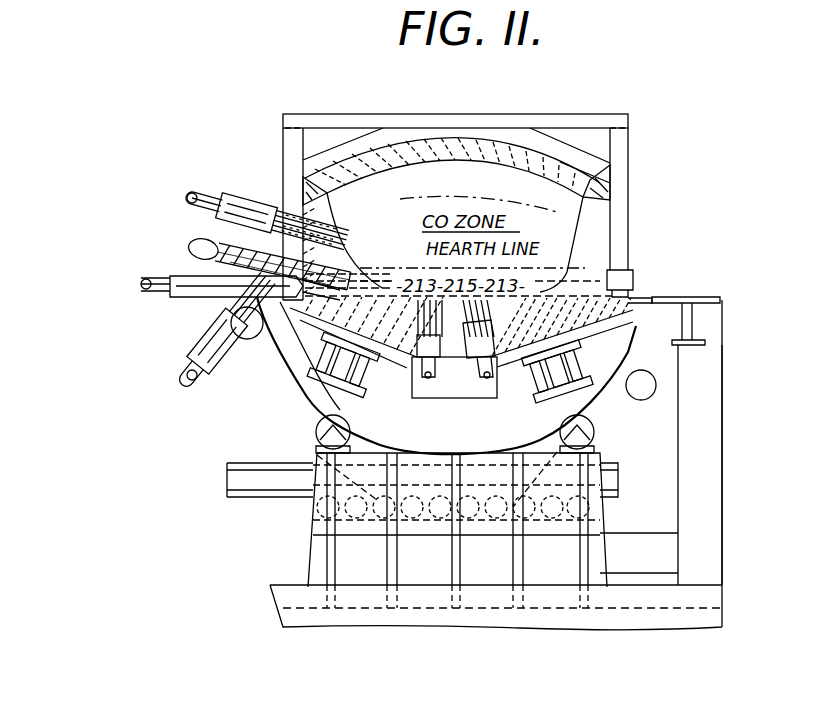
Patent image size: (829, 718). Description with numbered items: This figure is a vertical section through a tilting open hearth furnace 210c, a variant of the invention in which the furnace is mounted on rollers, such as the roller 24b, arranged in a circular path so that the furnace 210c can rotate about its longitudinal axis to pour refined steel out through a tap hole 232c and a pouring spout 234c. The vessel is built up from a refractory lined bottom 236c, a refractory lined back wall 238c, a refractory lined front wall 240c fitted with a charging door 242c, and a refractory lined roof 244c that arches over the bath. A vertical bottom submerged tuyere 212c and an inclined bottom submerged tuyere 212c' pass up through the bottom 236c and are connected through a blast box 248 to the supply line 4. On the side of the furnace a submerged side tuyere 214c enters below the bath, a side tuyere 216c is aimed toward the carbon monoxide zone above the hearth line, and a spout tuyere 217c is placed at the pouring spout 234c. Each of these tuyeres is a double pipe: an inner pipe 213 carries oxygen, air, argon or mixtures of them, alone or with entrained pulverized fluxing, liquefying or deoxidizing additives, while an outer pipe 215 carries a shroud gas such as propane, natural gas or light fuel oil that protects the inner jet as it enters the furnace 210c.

The line 4 is at (203, 192).
The trunnion roller 24b is at (246, 340).
The tilting open hearth furnace 210c is at (632, 206).
The vertical bottom submerged tuyere 212c is at (369, 384).
The inclined bottom submerged tuyere 212c' is at (535, 387).
The inner pipe 213 is at (232, 243).
The submerged side tuyere 214c is at (176, 273).
The outer pipe 215 is at (222, 257).
The side tuyere 216c is at (255, 190).
The spout tuyere 217c is at (228, 352).
The tap hole 232c is at (346, 262).
The pouring spout 234c is at (193, 248).
The refractory lined bottom 236c is at (588, 293).
The refractory lined back wall 238c is at (343, 247).
The refractory lined front wall 240c is at (610, 184).
The charging door 242c is at (598, 235).
The refractory lined roof 244c is at (518, 142).
The blast box 248 is at (436, 386).